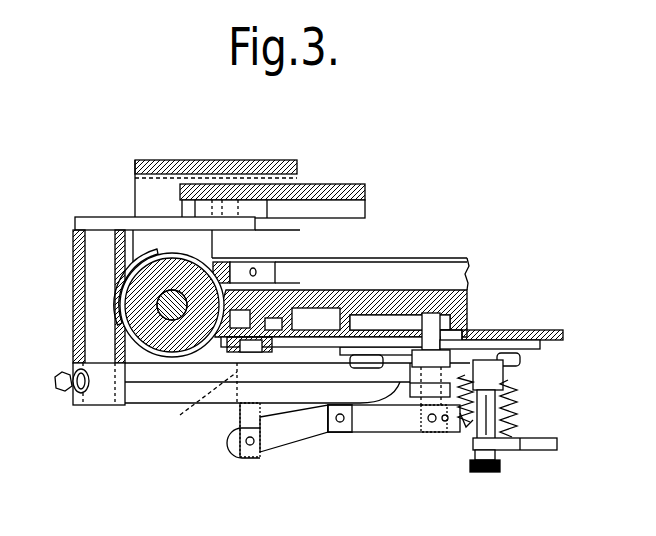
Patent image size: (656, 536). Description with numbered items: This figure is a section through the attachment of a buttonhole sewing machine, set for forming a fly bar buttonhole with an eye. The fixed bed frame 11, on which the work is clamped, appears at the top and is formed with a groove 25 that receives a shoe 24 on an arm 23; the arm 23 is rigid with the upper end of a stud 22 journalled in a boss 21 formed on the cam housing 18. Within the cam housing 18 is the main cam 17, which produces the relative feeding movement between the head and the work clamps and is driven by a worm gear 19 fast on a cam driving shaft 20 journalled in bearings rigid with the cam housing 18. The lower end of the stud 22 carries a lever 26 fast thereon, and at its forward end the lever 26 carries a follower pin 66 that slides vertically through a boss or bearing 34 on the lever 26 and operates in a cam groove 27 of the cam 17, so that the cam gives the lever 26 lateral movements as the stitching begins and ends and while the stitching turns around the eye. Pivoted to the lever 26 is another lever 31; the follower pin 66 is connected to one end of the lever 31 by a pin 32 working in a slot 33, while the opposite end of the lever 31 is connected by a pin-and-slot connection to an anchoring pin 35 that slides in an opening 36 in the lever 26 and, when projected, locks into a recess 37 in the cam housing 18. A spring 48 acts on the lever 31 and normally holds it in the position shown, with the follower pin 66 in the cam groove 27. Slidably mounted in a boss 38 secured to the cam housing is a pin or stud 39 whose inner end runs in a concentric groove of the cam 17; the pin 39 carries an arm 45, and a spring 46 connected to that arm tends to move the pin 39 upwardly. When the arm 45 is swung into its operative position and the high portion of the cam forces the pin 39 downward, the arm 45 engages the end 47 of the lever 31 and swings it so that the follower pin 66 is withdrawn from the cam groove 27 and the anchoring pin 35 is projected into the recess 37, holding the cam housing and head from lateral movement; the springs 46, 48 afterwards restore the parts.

The bed frame 11 is at (367, 190).
The main cam 17 is at (315, 293).
The cam housing 18 is at (563, 332).
The worm gear 19 is at (133, 298).
The cam driving shaft 20 is at (165, 313).
The boss 21 is at (80, 287).
The stud 22 is at (92, 247).
The arm 23 is at (128, 220).
The shoe 24 is at (250, 205).
The groove 25 is at (355, 210).
The lever 26 is at (312, 375).
The cam groove 27 is at (407, 312).
The lever 31 is at (380, 420).
The pin 32 is at (432, 422).
The slot 33 is at (448, 425).
The boss or bearing 34 is at (447, 360).
The anchoring pin 35 is at (240, 412).
The opening 36 is at (194, 402).
The recess 37 is at (258, 352).
The boss 38 is at (500, 378).
The pin or stud 39 is at (485, 407).
The arm 45 is at (543, 440).
The spring 46 is at (510, 415).
The end of lever 47 is at (485, 405).
The spring 48 is at (417, 405).
The follower pin 66 is at (438, 323).